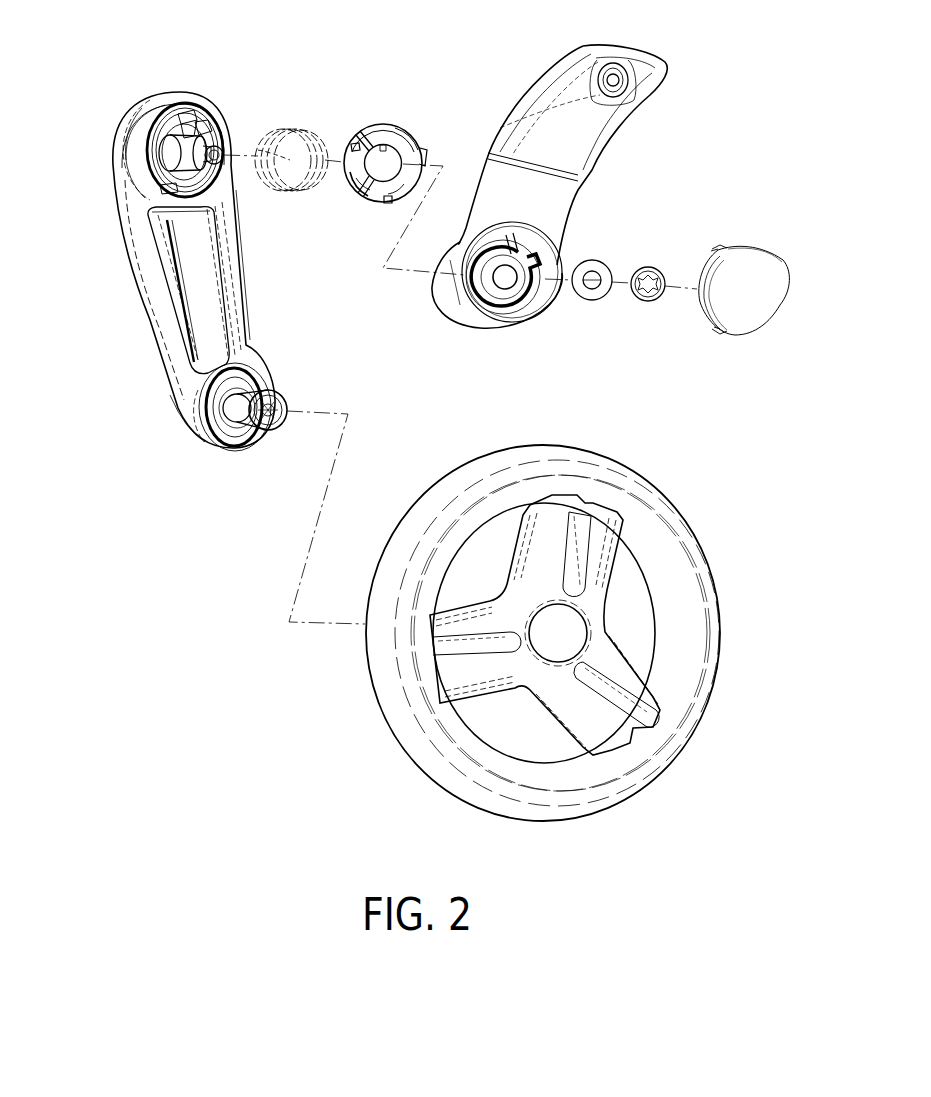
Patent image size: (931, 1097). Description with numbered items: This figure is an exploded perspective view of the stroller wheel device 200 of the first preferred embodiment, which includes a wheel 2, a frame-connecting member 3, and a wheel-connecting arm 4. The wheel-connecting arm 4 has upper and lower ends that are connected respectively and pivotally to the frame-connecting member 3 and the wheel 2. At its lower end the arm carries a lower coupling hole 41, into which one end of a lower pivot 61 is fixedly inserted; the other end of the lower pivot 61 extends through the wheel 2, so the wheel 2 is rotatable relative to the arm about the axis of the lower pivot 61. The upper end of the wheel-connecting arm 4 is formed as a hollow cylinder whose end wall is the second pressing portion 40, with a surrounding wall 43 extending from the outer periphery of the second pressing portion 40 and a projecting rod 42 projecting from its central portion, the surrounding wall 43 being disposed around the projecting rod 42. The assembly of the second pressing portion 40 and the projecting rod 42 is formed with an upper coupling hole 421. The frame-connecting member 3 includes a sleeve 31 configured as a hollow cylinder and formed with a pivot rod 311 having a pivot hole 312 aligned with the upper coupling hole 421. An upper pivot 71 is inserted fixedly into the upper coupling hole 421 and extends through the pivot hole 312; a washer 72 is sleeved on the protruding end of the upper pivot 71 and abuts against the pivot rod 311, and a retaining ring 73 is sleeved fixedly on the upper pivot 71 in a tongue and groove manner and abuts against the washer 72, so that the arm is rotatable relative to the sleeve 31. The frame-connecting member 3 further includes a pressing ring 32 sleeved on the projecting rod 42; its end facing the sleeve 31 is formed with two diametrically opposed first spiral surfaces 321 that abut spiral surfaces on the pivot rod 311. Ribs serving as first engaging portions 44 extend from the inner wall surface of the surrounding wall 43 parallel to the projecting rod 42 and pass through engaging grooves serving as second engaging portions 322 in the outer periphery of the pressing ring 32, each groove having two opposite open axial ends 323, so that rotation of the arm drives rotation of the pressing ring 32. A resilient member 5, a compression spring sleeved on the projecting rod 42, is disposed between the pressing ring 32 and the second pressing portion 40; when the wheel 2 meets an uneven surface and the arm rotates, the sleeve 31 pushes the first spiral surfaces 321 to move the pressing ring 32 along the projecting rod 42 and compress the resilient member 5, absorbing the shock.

The stroller wheel device 200 is at (213, 83).
The wheel 2 is at (402, 723).
The frame-connecting member 3 is at (607, 203).
The sleeve 31 is at (458, 295).
The pivot rod 311 is at (492, 300).
The pivot hole 312 is at (511, 285).
The pressing ring 32 is at (386, 156).
The first spiral surfaces 321 is at (403, 135).
The second engaging portions 322 is at (345, 147).
The open axial ends 323 is at (357, 144).
The wheel-connecting arm 4 is at (150, 352).
The second pressing portion 40 is at (173, 123).
The lower coupling hole 41 is at (247, 380).
The projecting rod 42 is at (155, 127).
The upper coupling hole 421 is at (160, 153).
The surrounding wall 43 is at (190, 115).
The first engaging portions 44 is at (197, 130).
The resilient member 5 is at (280, 133).
The lower pivot 61 is at (240, 418).
The upper pivot 71 is at (182, 153).
The washer 72 is at (592, 301).
The retaining ring 73 is at (647, 302).